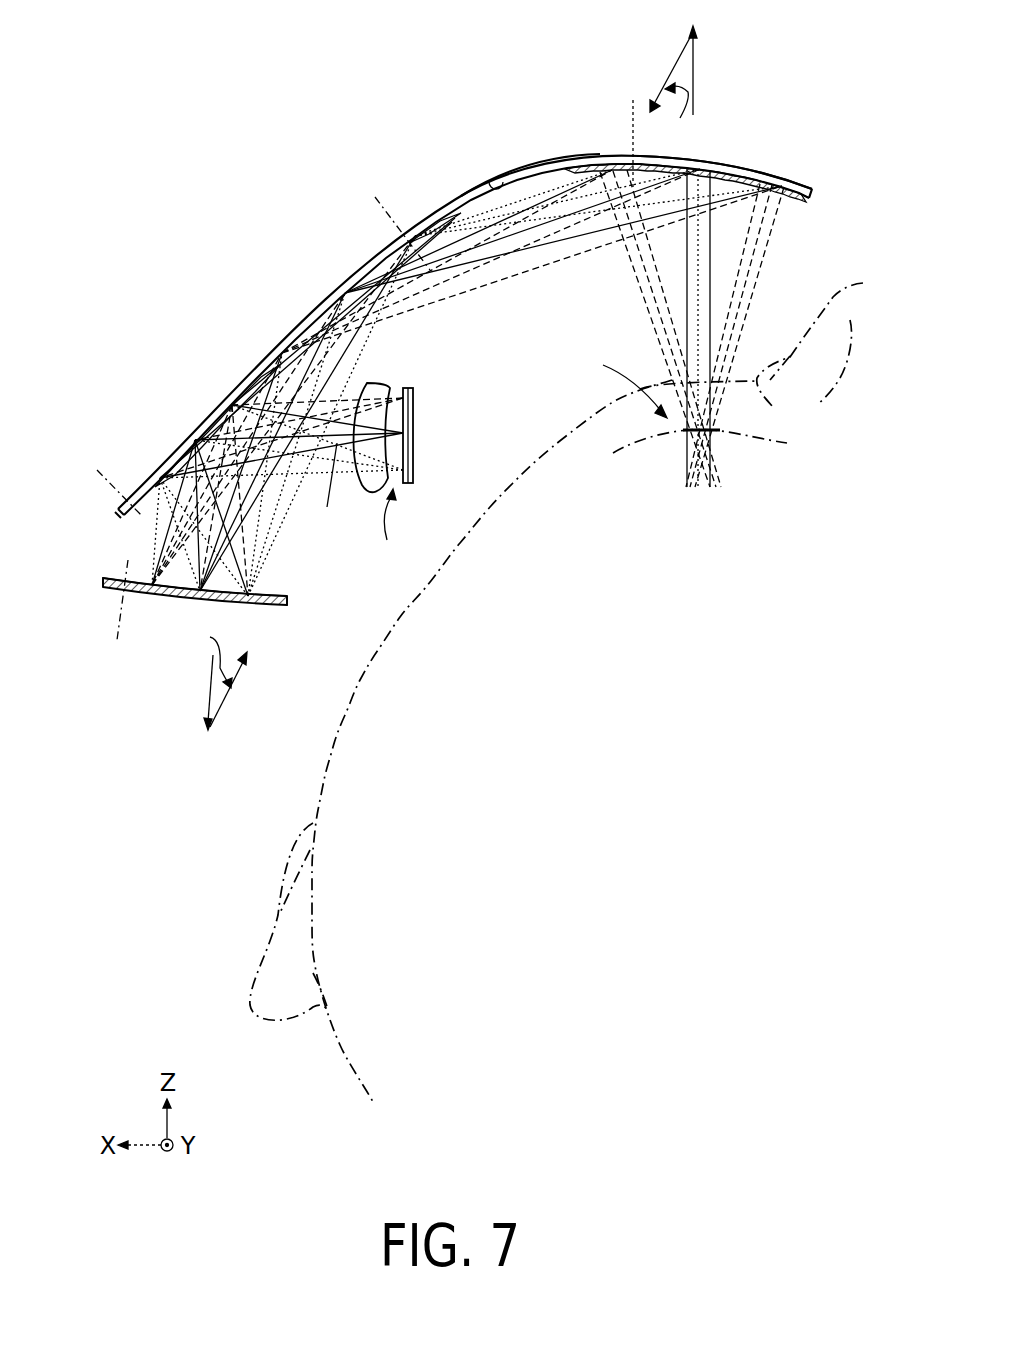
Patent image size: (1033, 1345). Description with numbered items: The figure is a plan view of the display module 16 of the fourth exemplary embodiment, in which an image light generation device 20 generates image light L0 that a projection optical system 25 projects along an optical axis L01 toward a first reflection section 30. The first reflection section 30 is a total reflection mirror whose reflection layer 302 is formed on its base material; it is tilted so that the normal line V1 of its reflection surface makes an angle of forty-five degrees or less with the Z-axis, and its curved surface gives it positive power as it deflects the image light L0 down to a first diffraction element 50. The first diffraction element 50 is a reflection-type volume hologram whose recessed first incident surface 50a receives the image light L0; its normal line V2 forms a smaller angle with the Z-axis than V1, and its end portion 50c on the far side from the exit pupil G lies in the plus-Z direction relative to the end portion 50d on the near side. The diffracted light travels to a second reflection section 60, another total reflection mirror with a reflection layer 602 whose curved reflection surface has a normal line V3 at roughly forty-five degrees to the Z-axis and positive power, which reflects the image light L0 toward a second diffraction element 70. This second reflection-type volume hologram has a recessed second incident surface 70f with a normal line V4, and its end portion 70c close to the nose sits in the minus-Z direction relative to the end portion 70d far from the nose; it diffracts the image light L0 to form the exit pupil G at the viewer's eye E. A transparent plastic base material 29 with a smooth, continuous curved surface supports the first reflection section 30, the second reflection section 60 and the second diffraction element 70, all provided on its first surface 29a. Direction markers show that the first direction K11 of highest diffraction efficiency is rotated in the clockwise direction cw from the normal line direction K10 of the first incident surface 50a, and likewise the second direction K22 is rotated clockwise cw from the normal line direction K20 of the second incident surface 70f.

The display module 16 is at (340, 112).
The image light generation device 20 is at (415, 420).
The projection optical system 25 is at (385, 385).
The base material 29 is at (527, 161).
The first surface 29a is at (497, 176).
The first reflection section 30 is at (207, 418).
The reflection layer 302 is at (130, 517).
The first diffraction element 50 is at (237, 604).
The first incident surface 50a is at (267, 592).
The end portion 50c is at (100, 582).
The end portion 50d is at (287, 602).
The second reflection section 60 is at (345, 284).
The reflection layer 602 is at (432, 208).
The second diffraction element 70 is at (737, 165).
The end portion 70c is at (814, 197).
The end portion 70d is at (565, 166).
The second incident surface 70f is at (797, 200).
The eye E is at (723, 437).
The exit pupil G is at (624, 383).
The image light L0 is at (386, 526).
The optical axis L01 is at (331, 490).
The normal line V1 is at (110, 494).
The normal line V2 is at (113, 640).
The normal line V3 is at (383, 200).
The normal line V4 is at (630, 118).
The normal line direction K10 is at (210, 700).
The first direction K11 is at (233, 708).
The normal line direction K20 is at (697, 73).
The second direction K22 is at (668, 62).
The clockwise direction cw is at (436, 385).